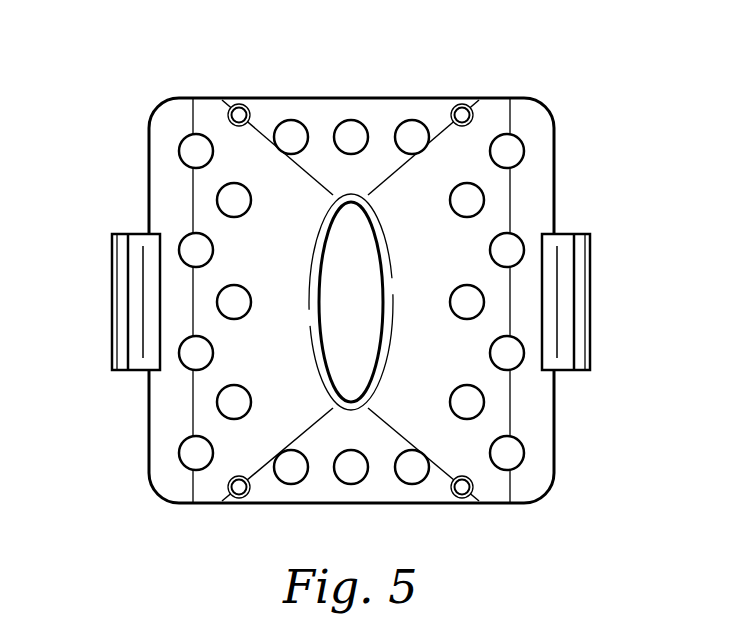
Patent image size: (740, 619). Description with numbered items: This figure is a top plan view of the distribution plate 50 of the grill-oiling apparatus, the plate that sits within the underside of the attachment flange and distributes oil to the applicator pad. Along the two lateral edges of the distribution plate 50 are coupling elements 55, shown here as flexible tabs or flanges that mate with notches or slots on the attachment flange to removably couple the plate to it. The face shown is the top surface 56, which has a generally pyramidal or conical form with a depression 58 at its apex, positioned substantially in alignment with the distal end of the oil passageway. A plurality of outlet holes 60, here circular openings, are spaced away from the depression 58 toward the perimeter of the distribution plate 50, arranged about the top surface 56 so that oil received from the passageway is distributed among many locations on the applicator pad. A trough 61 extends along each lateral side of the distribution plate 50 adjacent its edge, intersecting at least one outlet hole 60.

The distribution plate 50 is at (411, 98).
The coupling elements 55 is at (120, 310).
The top surface 56 is at (473, 232).
The depression 58 is at (357, 323).
The outlet holes 60 is at (288, 121).
The trough 61 is at (192, 408).